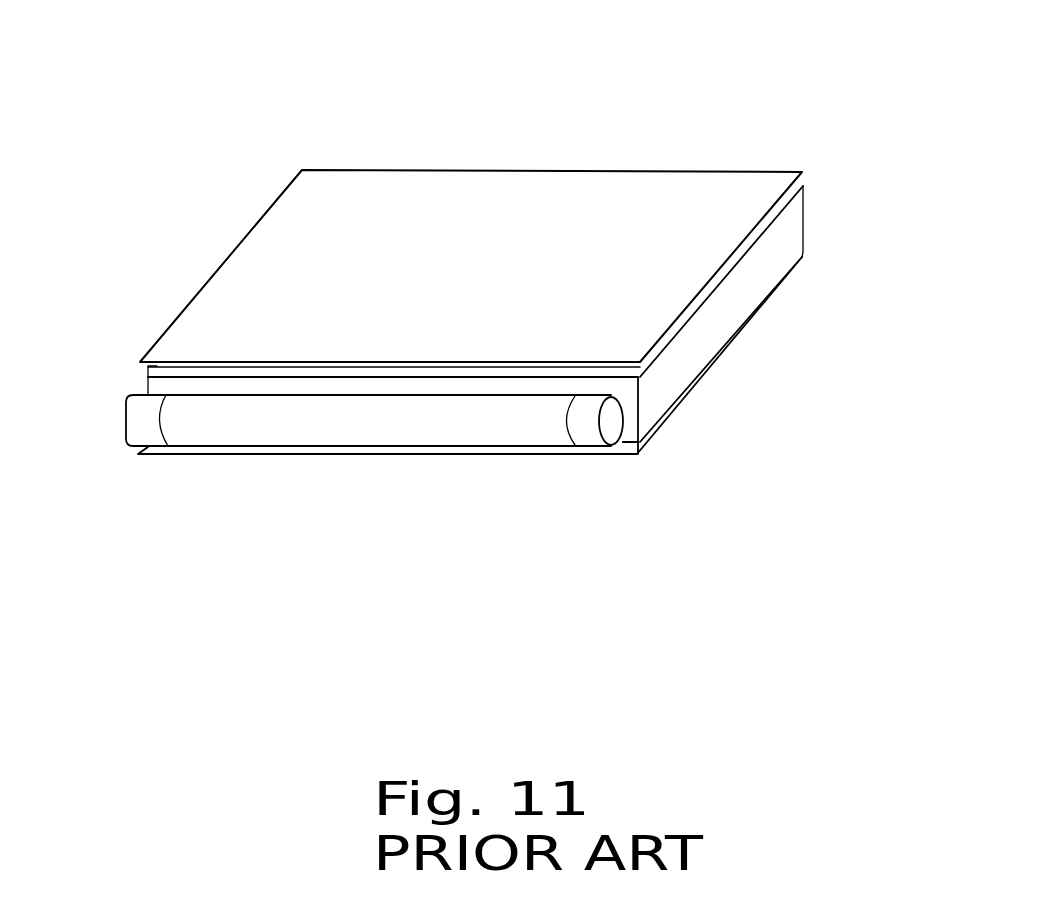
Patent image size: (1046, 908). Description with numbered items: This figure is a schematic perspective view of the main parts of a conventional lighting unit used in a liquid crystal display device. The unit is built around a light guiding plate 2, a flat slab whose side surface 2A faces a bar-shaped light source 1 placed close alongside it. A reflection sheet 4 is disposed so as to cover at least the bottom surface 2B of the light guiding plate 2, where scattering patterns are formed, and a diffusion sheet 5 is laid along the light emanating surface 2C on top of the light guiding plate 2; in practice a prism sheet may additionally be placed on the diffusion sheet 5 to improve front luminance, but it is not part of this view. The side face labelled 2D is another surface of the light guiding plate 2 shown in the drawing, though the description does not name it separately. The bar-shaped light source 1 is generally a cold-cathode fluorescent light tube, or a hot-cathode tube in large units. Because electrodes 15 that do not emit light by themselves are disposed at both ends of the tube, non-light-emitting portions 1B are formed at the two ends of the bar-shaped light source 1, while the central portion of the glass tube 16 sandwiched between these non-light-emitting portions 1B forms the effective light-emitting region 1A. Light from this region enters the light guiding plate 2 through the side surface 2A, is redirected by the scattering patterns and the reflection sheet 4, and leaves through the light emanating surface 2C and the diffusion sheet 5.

The diffusion sheet 5 is at (557, 198).
The light guiding plate 2 is at (479, 349).
The side surface 2A is at (627, 392).
The bottom surface 2B is at (703, 382).
The light emanating surface 2C is at (803, 183).
The side portion of reflector 2D is at (793, 226).
The bar-shaped light source 1 is at (354, 503).
The effective light-emitting region 1A is at (441, 428).
The non-light-emitting portions 1B is at (152, 430).
The electrodes 15 is at (354, 503).
The glass tube 16 is at (372, 503).
The reflection sheet 4 is at (627, 447).